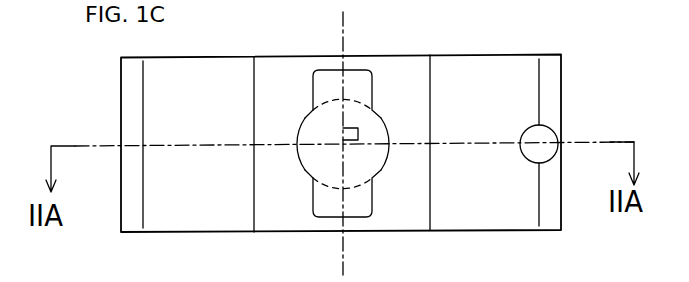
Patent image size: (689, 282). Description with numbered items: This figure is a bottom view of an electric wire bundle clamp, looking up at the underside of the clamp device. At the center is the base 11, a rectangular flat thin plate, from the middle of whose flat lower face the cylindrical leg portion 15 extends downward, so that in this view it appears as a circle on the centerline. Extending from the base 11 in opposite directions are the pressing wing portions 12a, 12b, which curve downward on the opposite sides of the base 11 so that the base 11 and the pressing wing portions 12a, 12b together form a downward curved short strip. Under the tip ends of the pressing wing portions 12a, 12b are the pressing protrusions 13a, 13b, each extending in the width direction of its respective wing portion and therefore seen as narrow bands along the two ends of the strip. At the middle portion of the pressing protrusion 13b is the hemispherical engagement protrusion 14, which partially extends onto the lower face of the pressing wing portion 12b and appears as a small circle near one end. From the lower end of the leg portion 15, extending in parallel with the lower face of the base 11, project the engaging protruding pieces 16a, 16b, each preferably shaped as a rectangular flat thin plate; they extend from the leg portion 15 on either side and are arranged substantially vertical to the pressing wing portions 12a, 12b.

The base 11 is at (377, 226).
The pressing wing portion 12a is at (204, 225).
The pressing wing portion 12b is at (443, 225).
The pressing protrusion 13a is at (128, 231).
The pressing protrusion 13b is at (550, 219).
The engagement protrusion 14 is at (544, 133).
The leg portion 15 is at (372, 121).
The engaging protruding piece 16a is at (317, 77).
The engaging protruding piece 16b is at (313, 199).